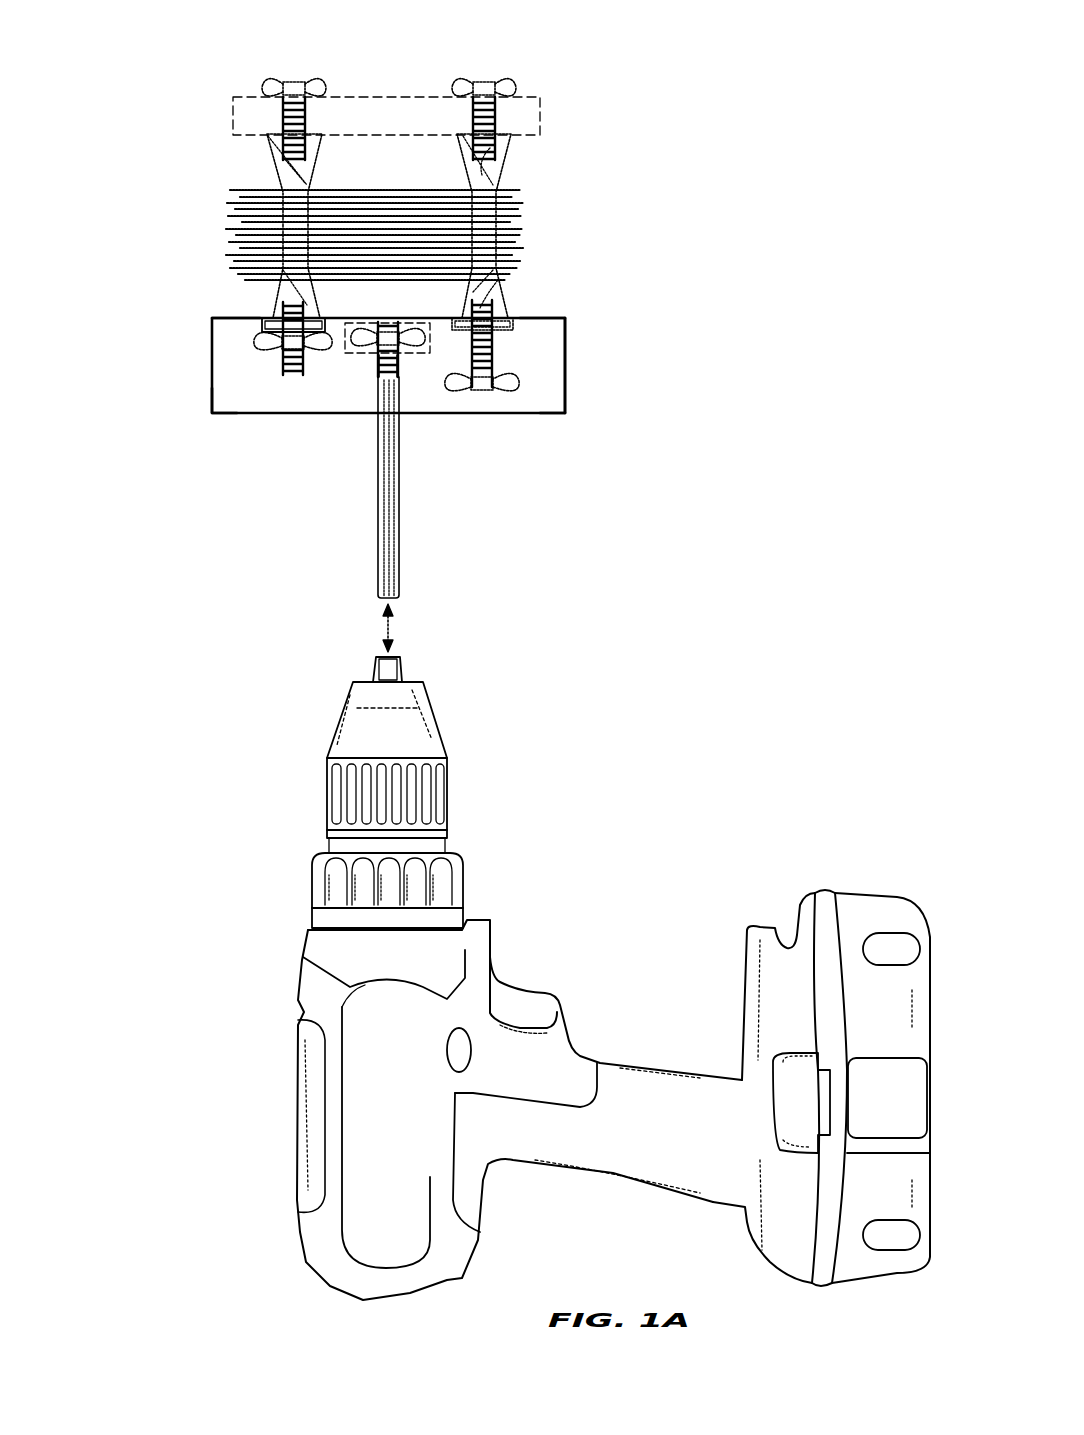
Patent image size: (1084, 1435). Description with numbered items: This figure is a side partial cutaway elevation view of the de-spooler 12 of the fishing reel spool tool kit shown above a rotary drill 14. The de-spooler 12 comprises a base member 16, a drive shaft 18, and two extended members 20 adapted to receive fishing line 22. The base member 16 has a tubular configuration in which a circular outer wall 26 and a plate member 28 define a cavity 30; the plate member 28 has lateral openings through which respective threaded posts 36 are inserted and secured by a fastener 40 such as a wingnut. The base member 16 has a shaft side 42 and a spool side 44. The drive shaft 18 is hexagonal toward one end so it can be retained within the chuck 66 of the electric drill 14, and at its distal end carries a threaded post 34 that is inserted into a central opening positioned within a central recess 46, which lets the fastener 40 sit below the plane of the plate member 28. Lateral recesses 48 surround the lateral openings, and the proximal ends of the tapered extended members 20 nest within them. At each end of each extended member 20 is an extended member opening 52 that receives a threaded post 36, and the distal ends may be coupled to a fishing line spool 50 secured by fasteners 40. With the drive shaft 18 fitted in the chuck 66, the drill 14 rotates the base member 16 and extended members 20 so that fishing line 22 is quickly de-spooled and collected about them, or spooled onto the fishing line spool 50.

The de-spooler 12 is at (737, 188).
The rotary drill 14 is at (244, 943).
The base member 16 is at (543, 372).
The drive shaft 18 is at (388, 517).
The extended members 20 is at (283, 177).
The fishing line 22 is at (520, 230).
The circular outer wall 26 is at (565, 350).
The plate member 28 is at (565, 318).
The cavity 30 is at (535, 413).
The threaded post 34 is at (370, 356).
The threaded posts 36 is at (285, 125).
The fastener 40 is at (322, 86).
The shaft side 42 is at (219, 414).
The spool side 44 is at (247, 318).
The central recess 46 is at (366, 325).
The lateral recesses 48 is at (260, 327).
The fishing line spool 50 is at (362, 112).
The extended member opening 52 is at (497, 150).
The chuck 66 is at (390, 675).